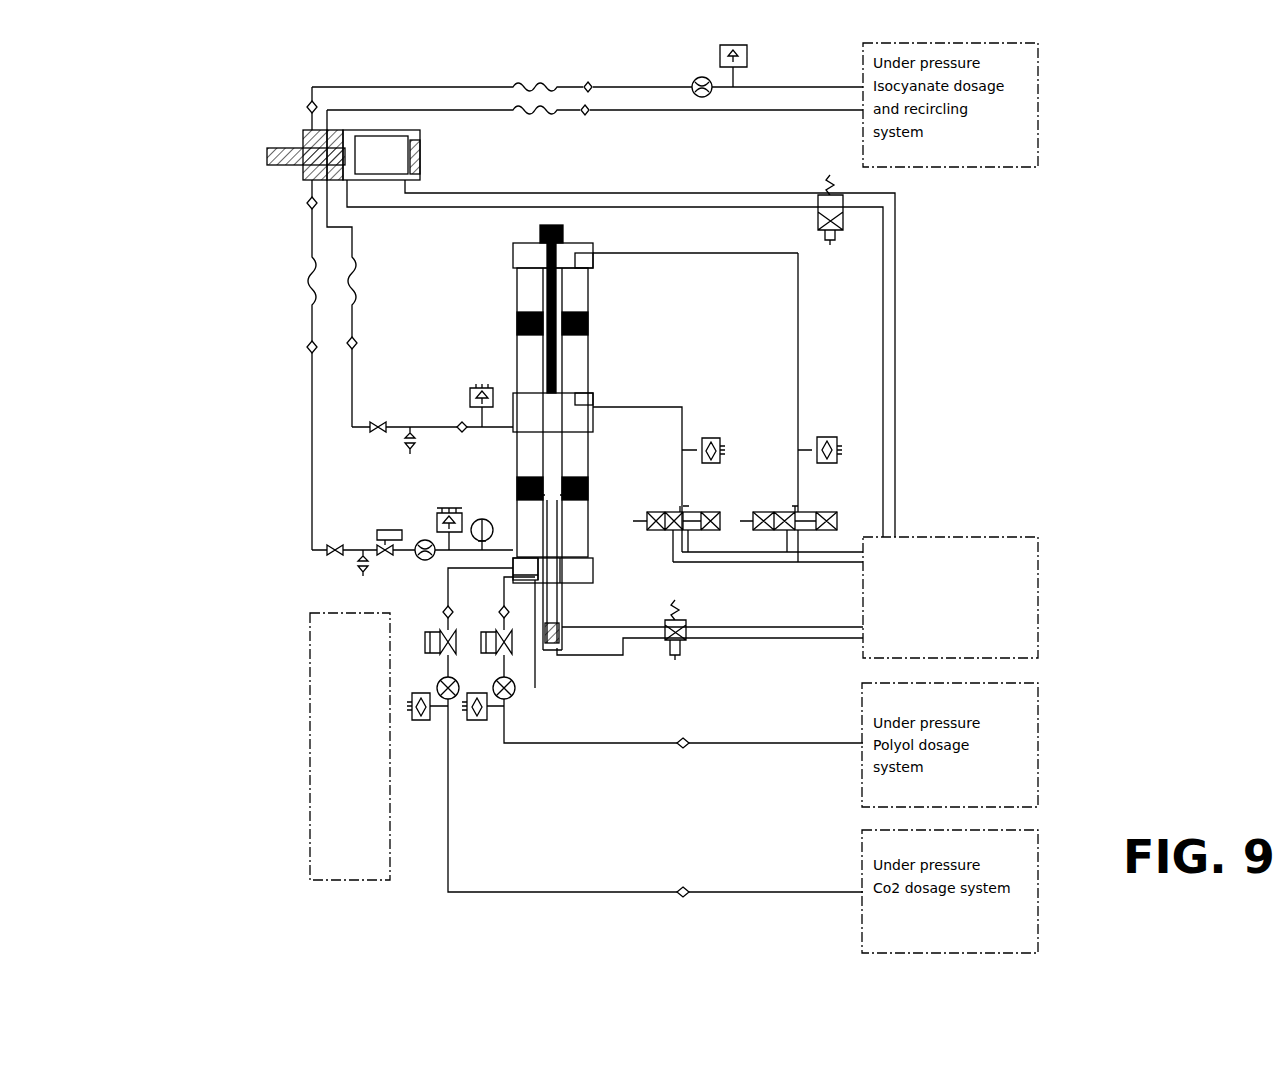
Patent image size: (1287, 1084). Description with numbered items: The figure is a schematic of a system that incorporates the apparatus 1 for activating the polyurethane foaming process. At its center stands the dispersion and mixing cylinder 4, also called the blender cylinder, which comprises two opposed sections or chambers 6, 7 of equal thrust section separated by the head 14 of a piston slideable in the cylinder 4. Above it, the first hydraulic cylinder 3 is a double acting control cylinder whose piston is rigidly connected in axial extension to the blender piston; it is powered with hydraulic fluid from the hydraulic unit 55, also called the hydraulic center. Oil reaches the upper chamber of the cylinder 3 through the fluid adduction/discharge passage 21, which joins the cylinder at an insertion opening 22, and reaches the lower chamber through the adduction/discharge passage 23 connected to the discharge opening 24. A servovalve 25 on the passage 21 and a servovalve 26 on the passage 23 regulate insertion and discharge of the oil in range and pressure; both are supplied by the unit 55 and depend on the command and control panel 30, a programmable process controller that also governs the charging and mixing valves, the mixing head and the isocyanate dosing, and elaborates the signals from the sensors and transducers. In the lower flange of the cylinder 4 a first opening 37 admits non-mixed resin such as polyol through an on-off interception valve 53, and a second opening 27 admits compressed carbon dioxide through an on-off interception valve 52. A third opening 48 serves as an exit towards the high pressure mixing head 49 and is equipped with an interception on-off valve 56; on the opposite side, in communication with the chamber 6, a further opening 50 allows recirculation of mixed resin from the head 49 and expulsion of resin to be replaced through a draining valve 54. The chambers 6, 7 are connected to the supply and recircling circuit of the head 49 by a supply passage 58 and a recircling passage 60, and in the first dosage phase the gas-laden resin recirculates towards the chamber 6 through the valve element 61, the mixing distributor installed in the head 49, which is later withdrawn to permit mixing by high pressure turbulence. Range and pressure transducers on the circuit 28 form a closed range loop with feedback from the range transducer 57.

The dosing device 1 is at (377, 383).
The first hydraulic cylinder 3 is at (510, 262).
The dispersion and mixing cylinder 4 is at (546, 446).
The section 6 is at (573, 455).
The section 7 is at (583, 547).
The head 14 is at (590, 492).
The fluid adduction/discharge passage 21 is at (800, 377).
The upper hydraulic connection 22 is at (590, 247).
The adduction/discharge passage 23 is at (683, 415).
The discharge opening 24 is at (593, 393).
The servovalve 25 is at (837, 523).
The servovalve 26 is at (705, 510).
The second opening 27 is at (515, 560).
The circuit 28 is at (300, 443).
The command and control panel 30 is at (370, 870).
The first opening 37 is at (565, 616).
The third opening 48 is at (510, 550).
The high pressure mixing head 49 is at (292, 138).
The further opening 50 is at (513, 417).
The on-off interception valve 52 is at (448, 699).
The on-off interception valve 53 is at (504, 699).
The draining valve 54 is at (383, 427).
The hydraulic unit 55 is at (990, 560).
The interception on-off valve 56 is at (363, 553).
The range transducer 57 is at (425, 557).
The supply passage 58 is at (233, 318).
The recircling passage 60 is at (352, 327).
The valve element 61 is at (303, 173).